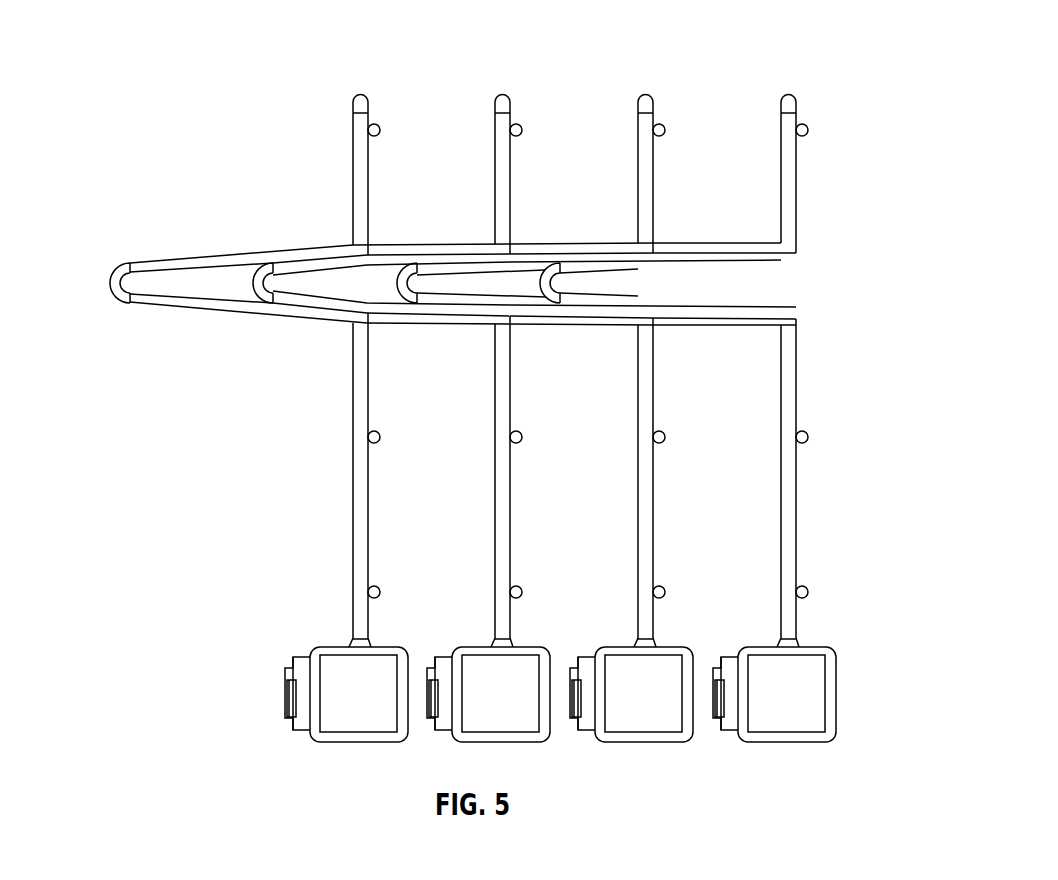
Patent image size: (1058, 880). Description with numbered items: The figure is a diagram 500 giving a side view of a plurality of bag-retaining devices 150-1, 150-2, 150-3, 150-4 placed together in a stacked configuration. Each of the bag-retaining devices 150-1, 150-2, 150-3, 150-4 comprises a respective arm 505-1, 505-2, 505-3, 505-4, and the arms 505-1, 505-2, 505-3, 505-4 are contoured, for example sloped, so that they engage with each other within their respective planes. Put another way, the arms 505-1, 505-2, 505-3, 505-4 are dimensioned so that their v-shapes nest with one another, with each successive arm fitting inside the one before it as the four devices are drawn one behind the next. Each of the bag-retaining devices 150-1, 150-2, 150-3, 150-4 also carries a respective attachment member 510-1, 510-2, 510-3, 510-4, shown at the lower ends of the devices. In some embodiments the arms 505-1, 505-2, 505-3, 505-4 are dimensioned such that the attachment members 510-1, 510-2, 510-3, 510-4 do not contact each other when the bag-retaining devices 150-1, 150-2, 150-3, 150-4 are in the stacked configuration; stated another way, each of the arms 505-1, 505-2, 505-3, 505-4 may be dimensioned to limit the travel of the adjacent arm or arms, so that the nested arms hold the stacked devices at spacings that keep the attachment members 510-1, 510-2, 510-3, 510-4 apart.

The diagram 500 is at (819, 37).
The bag-retaining device 150-1 is at (357, 92).
The bag-retaining device 150-2 is at (499, 92).
The bag-retaining device 150-3 is at (642, 92).
The bag-retaining device 150-4 is at (785, 92).
The arm 505-1 is at (157, 308).
The arm 505-2 is at (437, 326).
The arm 505-3 is at (600, 328).
The arm 505-4 is at (727, 327).
The attachment member 510-1 is at (349, 747).
The attachment member 510-2 is at (491, 747).
The attachment member 510-3 is at (634, 747).
The attachment member 510-4 is at (777, 747).